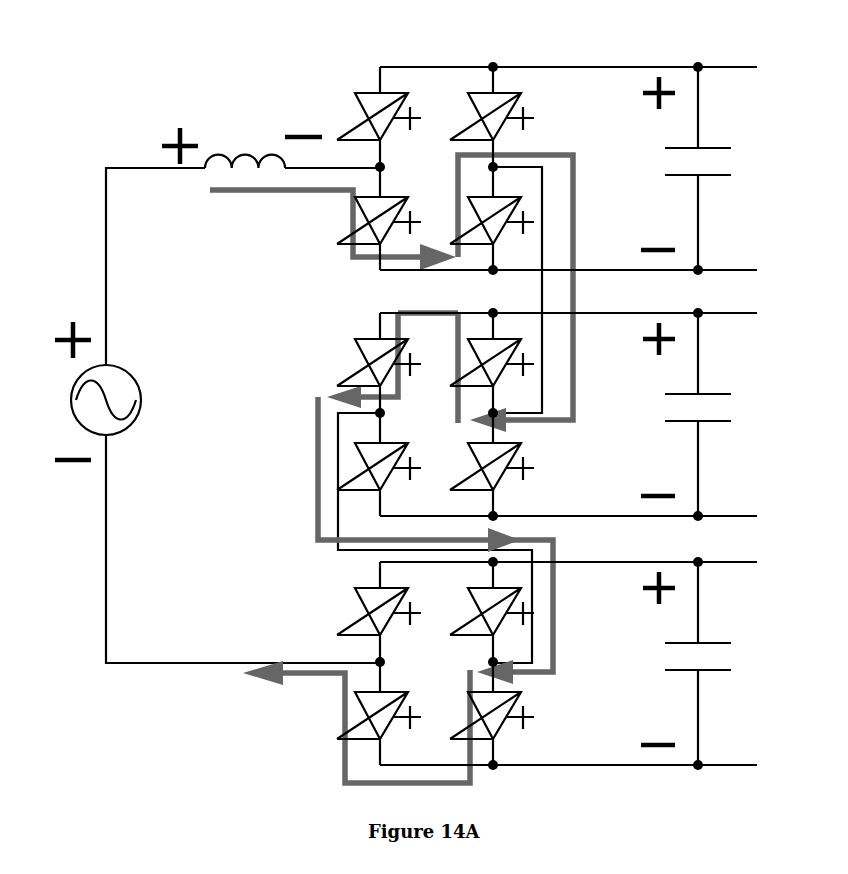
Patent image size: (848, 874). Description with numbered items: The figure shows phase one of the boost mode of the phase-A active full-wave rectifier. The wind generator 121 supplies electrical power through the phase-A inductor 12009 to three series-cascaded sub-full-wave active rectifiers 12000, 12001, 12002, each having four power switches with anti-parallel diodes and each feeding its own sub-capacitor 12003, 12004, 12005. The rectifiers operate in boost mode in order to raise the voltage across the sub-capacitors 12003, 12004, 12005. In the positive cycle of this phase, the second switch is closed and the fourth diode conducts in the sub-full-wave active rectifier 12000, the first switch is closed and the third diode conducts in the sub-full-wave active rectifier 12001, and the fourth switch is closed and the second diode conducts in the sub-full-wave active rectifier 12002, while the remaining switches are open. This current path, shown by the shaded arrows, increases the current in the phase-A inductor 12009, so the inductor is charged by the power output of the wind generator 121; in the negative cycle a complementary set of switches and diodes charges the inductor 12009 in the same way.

The sub-full-wave active rectifier 12000 is at (517, 150).
The sub-full-wave active rectifier 12001 is at (517, 399).
The sub-full-wave active rectifier 12002 is at (517, 647).
The sub-capacitor 12003 is at (699, 150).
The sub-capacitor 12004 is at (699, 399).
The sub-capacitor 12005 is at (699, 647).
The phase-A inductor 12009 is at (243, 137).
The wind generator 121 is at (135, 400).